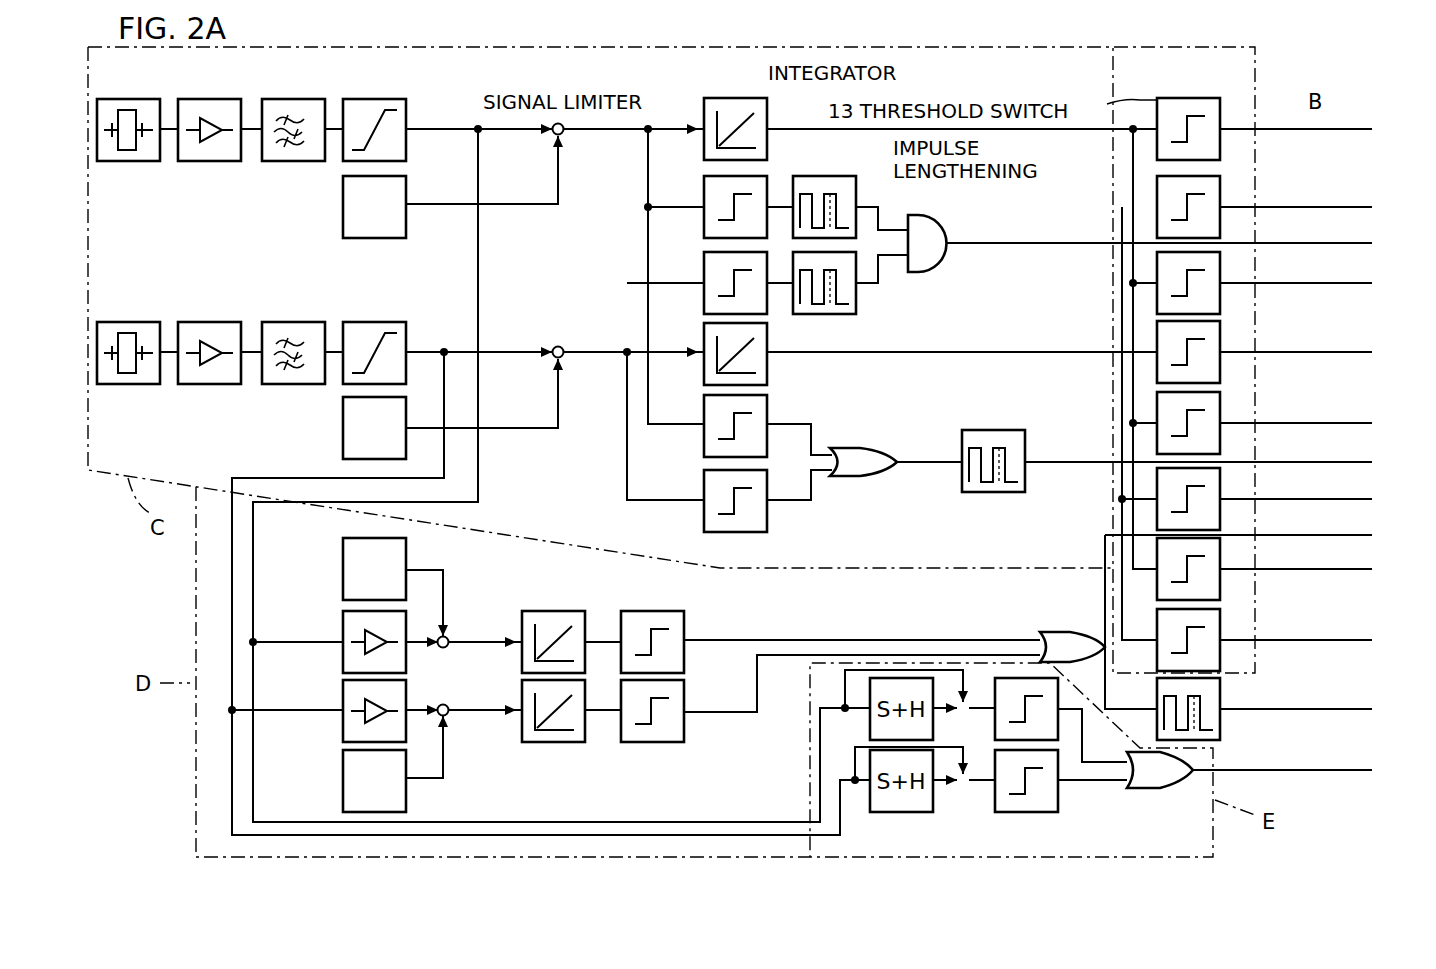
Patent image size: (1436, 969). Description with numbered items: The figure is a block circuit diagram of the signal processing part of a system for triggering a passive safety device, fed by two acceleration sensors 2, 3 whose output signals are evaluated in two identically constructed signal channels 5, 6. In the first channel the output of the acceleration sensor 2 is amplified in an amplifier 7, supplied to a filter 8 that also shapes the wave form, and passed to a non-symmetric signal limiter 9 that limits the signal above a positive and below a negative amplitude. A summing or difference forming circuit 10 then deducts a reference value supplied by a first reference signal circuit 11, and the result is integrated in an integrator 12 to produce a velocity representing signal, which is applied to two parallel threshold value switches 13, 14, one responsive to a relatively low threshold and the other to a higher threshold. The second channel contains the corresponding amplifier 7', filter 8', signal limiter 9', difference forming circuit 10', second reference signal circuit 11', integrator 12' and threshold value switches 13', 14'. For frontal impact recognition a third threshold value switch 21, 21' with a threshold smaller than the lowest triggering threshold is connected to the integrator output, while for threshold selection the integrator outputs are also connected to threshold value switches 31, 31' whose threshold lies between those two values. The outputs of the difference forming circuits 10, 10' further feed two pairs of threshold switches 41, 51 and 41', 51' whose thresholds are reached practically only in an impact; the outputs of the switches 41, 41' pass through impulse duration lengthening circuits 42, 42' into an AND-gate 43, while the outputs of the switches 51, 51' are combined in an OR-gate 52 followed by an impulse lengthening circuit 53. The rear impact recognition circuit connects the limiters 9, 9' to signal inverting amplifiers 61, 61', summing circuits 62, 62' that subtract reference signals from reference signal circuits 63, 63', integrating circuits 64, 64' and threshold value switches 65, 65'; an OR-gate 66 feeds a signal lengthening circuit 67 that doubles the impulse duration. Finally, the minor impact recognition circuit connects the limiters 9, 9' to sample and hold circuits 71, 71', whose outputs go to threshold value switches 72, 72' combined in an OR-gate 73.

The acceleration sensor 2 is at (104, 163).
The acceleration sensor 3 is at (104, 387).
The signal channel 5 is at (920, 87).
The signal channel 6 is at (955, 362).
The amplifier 7 is at (209, 109).
The amplifier 7' is at (209, 374).
The filter 8 is at (309, 110).
The filter 8' is at (293, 374).
The non-symmetric signal limiter 9 is at (401, 125).
The non-symmetric signal limiter 9' is at (400, 346).
The summing or difference forming circuit 10 is at (581, 147).
The summing or difference forming circuit 10' is at (578, 369).
The first reference signal circuit 11 is at (393, 234).
The second reference signal circuit 11' is at (344, 431).
The integrator 12 is at (735, 110).
The integrator 12' is at (766, 360).
The threshold value switch 13 is at (1188, 129).
The threshold value switch 13' is at (1225, 365).
The threshold value switch 14 is at (1222, 292).
The threshold value switch 14' is at (1225, 499).
The third threshold value switch 21 is at (1152, 207).
The third threshold value switch 21' is at (1225, 424).
The threshold value switch 31 is at (1232, 577).
The threshold value switch 31' is at (1230, 646).
The threshold switch 41 is at (713, 205).
The threshold switch 41' is at (711, 280).
The impulse duration lengthening circuit 42 is at (831, 187).
The impulse duration lengthening circuit 42' is at (854, 295).
The AND-gate 43 is at (920, 272).
The threshold switch 51 is at (708, 432).
The threshold switch 51' is at (766, 510).
The OR-gate 52 is at (872, 476).
The impulse lengthening circuit 53 is at (975, 493).
The signal inverting amplifier 61 is at (347, 634).
The signal inverting amplifier 61' is at (343, 704).
The summing circuit 62 is at (467, 625).
The summing circuit 62' is at (467, 690).
The reference signal circuit 63 is at (407, 567).
The reference signal circuit 63' is at (411, 782).
The integrating circuit 64 is at (547, 624).
The integrating circuit 64' is at (523, 717).
The threshold value switch 65 is at (684, 639).
The threshold value switch 65' is at (687, 716).
The OR-gate 66 is at (1052, 632).
The signal lengthening circuit 67 is at (1220, 735).
The sample and hold circuit 71 is at (848, 732).
The sample and hold circuit 71' is at (914, 797).
The threshold value switch 72 is at (1055, 717).
The threshold value switch 72' is at (1059, 786).
The OR-gate 73 is at (1160, 788).